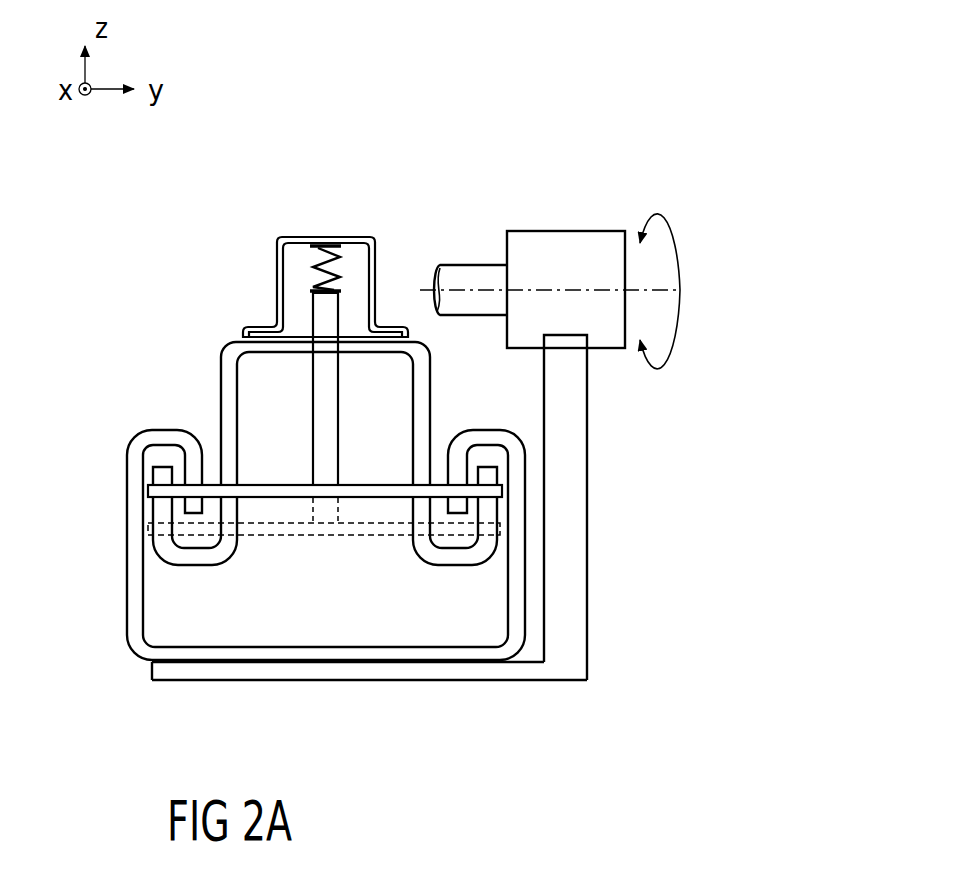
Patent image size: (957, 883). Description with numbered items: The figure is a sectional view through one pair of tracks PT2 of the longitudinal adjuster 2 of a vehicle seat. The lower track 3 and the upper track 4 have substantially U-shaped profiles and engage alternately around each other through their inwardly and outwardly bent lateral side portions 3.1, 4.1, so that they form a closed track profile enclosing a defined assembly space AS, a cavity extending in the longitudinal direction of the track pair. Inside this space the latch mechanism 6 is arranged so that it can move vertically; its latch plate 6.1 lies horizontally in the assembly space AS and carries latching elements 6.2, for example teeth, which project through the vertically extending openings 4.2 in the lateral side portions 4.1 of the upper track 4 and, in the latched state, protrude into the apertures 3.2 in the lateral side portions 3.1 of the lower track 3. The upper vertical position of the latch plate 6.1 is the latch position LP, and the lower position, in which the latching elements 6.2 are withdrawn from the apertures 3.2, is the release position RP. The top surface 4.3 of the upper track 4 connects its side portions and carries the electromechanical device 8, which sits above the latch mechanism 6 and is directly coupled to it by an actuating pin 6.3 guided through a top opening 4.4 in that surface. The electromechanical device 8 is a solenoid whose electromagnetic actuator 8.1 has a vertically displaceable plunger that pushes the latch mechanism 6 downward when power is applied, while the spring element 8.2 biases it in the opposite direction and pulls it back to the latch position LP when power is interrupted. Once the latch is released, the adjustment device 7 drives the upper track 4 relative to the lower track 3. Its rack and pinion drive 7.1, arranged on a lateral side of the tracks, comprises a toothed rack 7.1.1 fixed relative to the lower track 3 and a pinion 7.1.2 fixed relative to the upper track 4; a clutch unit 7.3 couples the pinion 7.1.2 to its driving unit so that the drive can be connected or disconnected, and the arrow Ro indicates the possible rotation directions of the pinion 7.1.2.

The longitudinal adjuster 2 is at (640, 174).
The lower track 3 is at (127, 602).
The lateral side portions 3.1 is at (515, 437).
The apertures 3.2 is at (453, 470).
The upper track 4 is at (222, 378).
The lateral side portions 4.1 is at (488, 517).
The openings 4.2 is at (497, 502).
The top surface 4.3 is at (377, 357).
The top opening 4.4 is at (340, 337).
The latch mechanism 6 is at (296, 464).
The latch plate 6.1 is at (258, 535).
The latching elements 6.2 is at (157, 477).
The actuating pin 6.3 is at (323, 373).
The adjustment device 7 is at (668, 333).
The rack and pinion drive 7.1 is at (655, 255).
The toothed rack 7.1.1 is at (573, 397).
The pinion 7.1.2 is at (555, 243).
The clutch unit 7.3 is at (466, 272).
The electromechanical device 8 is at (398, 198).
The electromagnetic actuator 8.1 is at (318, 268).
The spring element 8.2 is at (325, 247).
The pair of tracks PT2 is at (158, 222).
The latch position LP is at (140, 491).
The release position RP is at (140, 528).
The assembly space AS is at (160, 615).
The arrow Ro is at (680, 273).